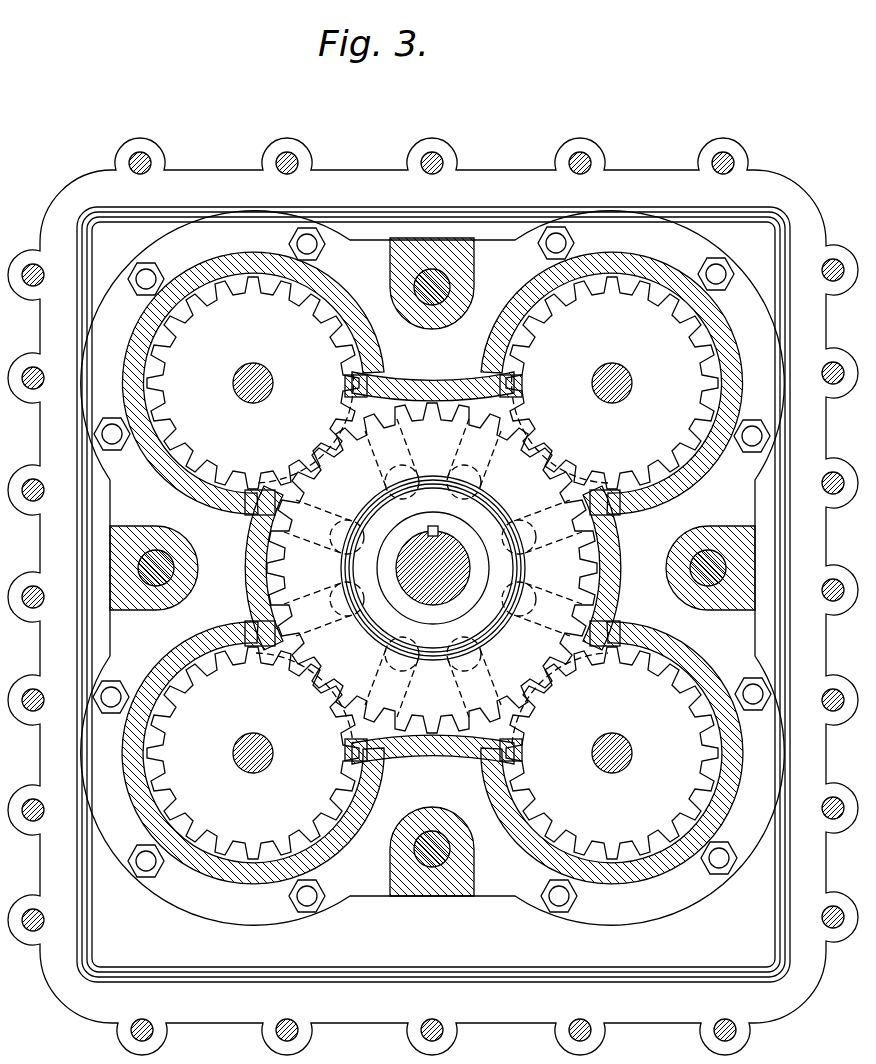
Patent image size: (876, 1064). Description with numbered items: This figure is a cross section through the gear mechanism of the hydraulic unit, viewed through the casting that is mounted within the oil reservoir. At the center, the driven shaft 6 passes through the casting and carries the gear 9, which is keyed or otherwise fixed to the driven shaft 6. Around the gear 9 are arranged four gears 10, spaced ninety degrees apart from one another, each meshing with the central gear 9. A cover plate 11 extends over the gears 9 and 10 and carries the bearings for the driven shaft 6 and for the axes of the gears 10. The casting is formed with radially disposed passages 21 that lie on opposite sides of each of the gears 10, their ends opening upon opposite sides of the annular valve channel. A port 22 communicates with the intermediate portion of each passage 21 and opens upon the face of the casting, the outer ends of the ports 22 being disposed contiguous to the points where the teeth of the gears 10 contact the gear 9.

The driven shaft 6 is at (450, 548).
The gear 9 is at (290, 572).
The gears 10 is at (432, 568).
The cover plate 11 is at (604, 547).
The radially disposed passages 21 is at (352, 292).
The ports 22 is at (505, 385).